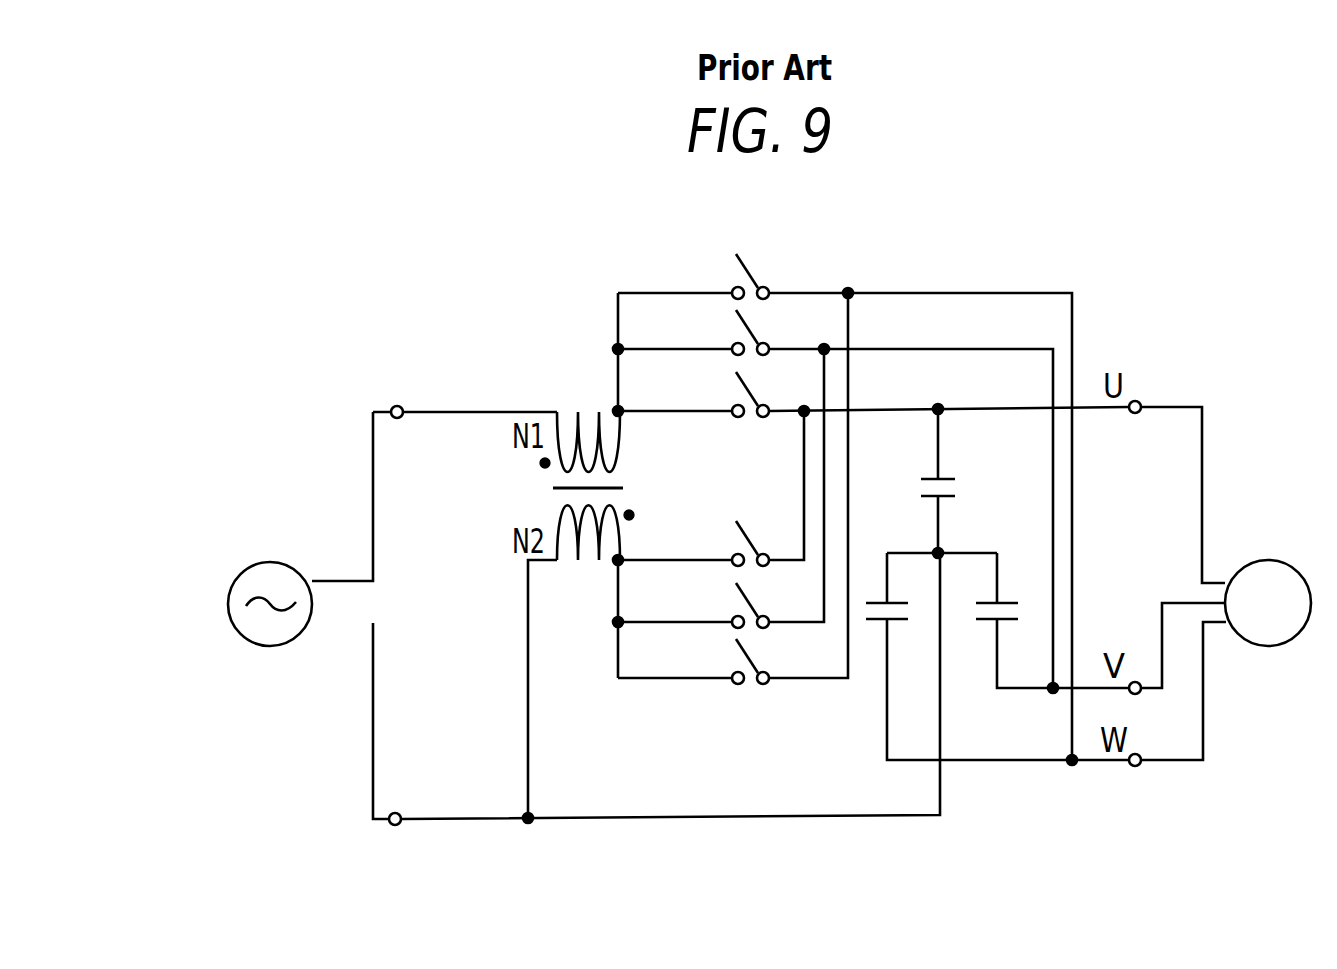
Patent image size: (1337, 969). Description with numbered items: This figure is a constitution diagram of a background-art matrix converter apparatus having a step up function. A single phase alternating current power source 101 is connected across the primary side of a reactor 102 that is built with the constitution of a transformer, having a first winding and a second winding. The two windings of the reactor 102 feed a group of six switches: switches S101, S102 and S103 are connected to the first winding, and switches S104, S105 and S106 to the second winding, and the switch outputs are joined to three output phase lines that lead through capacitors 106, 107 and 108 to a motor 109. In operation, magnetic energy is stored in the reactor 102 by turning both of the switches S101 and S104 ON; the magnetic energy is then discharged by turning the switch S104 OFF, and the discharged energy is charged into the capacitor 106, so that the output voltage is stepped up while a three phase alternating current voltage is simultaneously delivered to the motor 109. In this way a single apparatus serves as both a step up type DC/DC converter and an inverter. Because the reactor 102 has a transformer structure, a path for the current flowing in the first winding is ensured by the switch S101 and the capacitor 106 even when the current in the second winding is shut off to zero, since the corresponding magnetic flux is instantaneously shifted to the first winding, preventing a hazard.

The single phase alternating current power source 101 is at (272, 647).
The reactor of transformer structure 102 is at (562, 410).
The capacitor 106 is at (957, 489).
The capacitor 107 is at (1010, 600).
The capacitor 108 is at (880, 621).
The motor 109 is at (1268, 646).
The switch S101 is at (711, 393).
The switch S102 is at (711, 332).
The switch S103 is at (711, 276).
The switch S104 is at (711, 543).
The switch S105 is at (711, 605).
The switch S106 is at (711, 661).